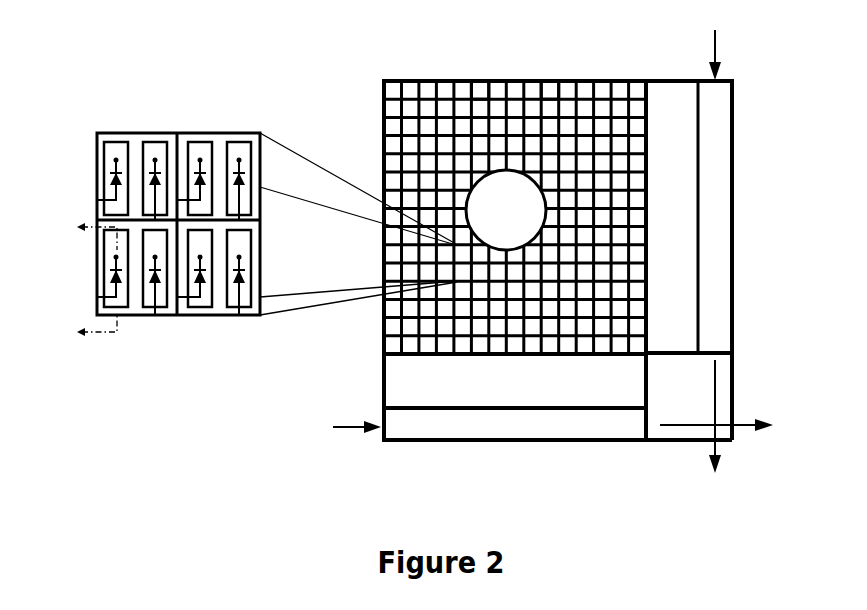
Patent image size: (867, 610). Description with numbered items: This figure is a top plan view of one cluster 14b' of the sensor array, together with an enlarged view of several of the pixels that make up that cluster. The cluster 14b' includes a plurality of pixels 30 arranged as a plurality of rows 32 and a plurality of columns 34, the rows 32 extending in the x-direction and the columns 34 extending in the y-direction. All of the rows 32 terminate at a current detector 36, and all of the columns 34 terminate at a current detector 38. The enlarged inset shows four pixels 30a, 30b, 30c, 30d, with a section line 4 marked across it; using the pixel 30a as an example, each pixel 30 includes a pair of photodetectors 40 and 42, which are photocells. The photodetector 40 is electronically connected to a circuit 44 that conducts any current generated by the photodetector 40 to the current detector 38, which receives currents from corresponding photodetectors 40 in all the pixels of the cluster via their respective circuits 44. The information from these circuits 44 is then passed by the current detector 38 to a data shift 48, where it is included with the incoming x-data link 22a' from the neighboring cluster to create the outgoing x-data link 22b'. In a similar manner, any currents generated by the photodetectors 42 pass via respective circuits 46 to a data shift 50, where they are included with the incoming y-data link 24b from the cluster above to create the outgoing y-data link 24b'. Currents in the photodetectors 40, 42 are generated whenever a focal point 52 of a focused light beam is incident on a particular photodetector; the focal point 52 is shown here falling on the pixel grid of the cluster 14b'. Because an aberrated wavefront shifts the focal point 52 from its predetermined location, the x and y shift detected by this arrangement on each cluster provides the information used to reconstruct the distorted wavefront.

The section line 4- 4 is at (92, 279).
The cluster 14b' is at (570, 61).
The x-data link 22a' is at (336, 446).
The x-data link 22b' is at (733, 401).
The y-data link 24b is at (742, 50).
The y-data link 24b' is at (682, 424).
The pixel 30 is at (482, 83).
The pixel 30a is at (138, 136).
The pixel 30b is at (135, 312).
The pixel 30c is at (217, 135).
The pixel 30d is at (215, 312).
The row 32 is at (370, 93).
The column 34 is at (397, 78).
The current detector 36 is at (665, 81).
The current detector 38 is at (383, 372).
The photodetector 40 is at (108, 141).
The photodetector 42 is at (160, 140).
The circuit 44 is at (96, 155).
The circuit 46 is at (262, 233).
The data shift 48 is at (582, 440).
The data shift 50 is at (732, 126).
The focal point 52 is at (500, 210).